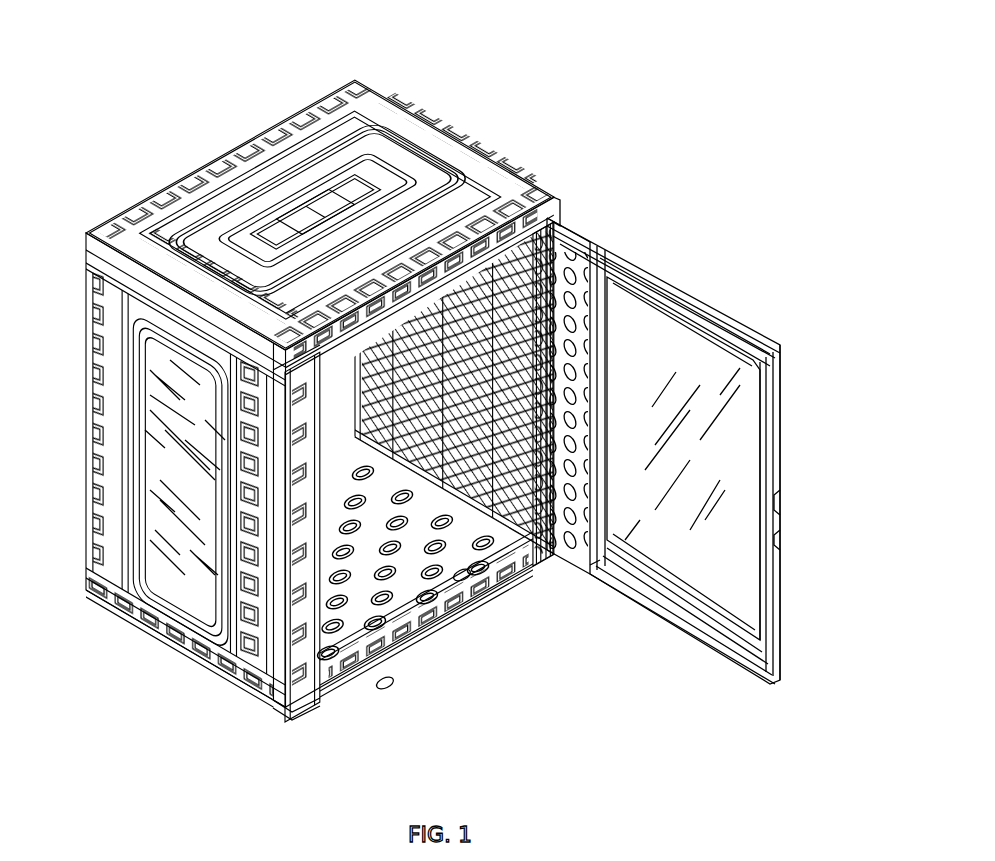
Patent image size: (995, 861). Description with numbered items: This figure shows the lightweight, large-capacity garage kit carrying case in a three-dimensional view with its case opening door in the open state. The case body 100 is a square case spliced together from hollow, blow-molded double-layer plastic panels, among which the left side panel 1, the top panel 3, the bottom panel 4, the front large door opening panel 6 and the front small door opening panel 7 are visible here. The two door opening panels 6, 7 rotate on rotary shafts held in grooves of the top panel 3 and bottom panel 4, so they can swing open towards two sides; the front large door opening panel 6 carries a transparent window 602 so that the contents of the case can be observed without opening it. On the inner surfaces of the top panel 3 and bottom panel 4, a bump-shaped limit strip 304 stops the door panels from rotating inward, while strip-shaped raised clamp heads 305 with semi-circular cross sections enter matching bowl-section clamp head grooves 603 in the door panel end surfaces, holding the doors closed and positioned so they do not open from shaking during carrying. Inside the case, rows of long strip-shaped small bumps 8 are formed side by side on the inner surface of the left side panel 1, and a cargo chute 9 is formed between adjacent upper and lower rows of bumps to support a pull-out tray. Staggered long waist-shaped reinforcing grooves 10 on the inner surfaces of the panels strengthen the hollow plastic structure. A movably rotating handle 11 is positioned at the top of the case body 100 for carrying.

The case body 100 is at (483, 97).
The left side panel 1 is at (140, 637).
The top panel 3 is at (330, 93).
The bottom panel 4 is at (440, 633).
The front large door opening panel 6 is at (647, 262).
The front small door opening panel 7 is at (303, 700).
The small bumps 8 is at (603, 253).
The cargo chute 9 is at (573, 222).
The reinforcing grooves 10 is at (455, 690).
The handle 11 is at (213, 165).
The limit strip 304 is at (465, 578).
The raised clamp heads 305 is at (340, 695).
The transparent window 602 is at (683, 357).
The clamp head grooves 603 is at (770, 340).